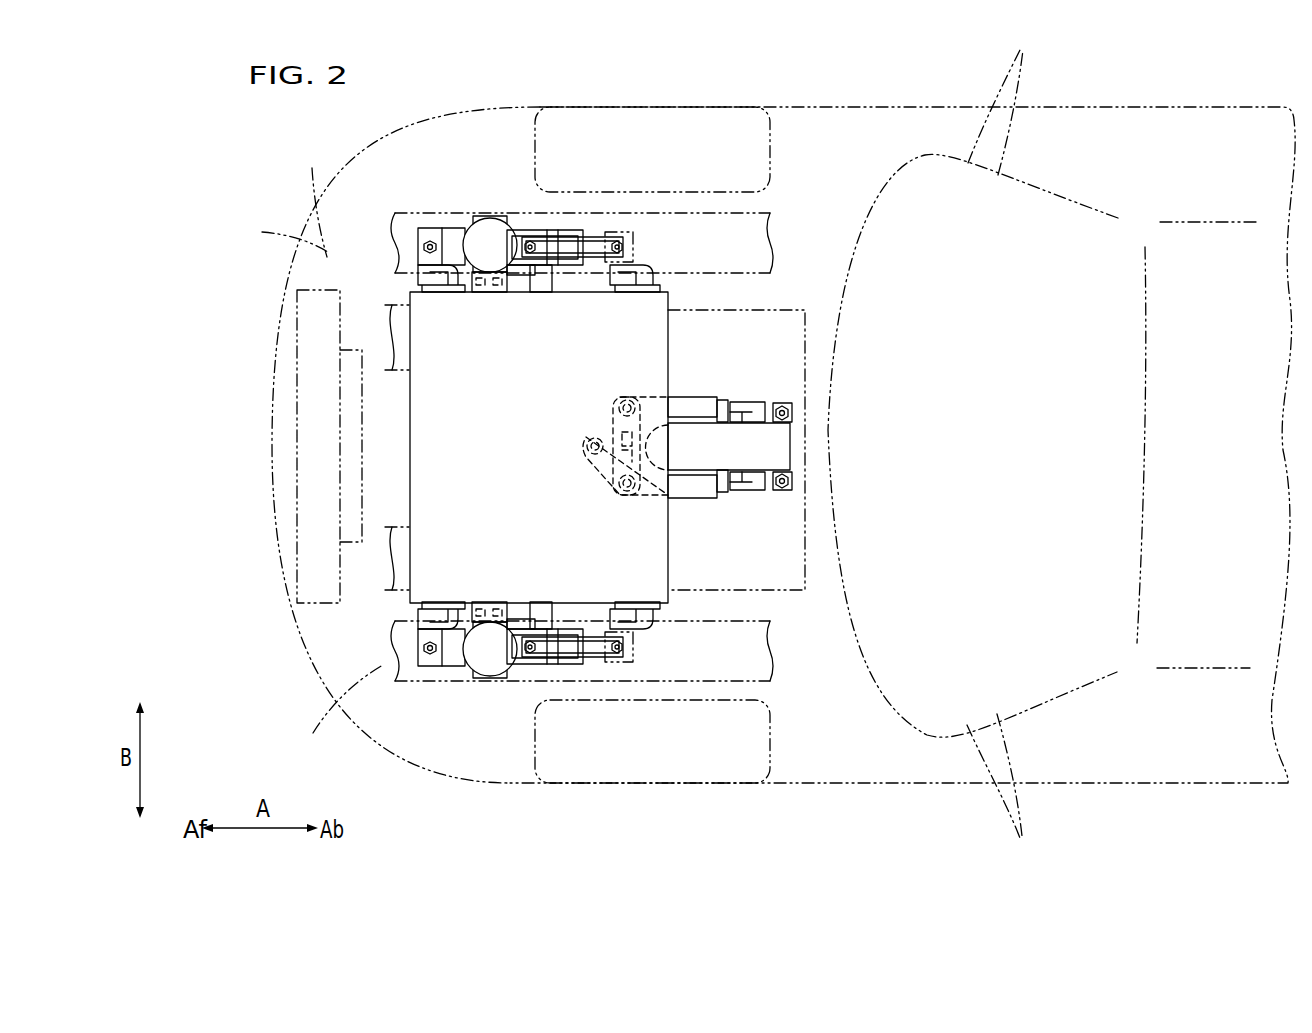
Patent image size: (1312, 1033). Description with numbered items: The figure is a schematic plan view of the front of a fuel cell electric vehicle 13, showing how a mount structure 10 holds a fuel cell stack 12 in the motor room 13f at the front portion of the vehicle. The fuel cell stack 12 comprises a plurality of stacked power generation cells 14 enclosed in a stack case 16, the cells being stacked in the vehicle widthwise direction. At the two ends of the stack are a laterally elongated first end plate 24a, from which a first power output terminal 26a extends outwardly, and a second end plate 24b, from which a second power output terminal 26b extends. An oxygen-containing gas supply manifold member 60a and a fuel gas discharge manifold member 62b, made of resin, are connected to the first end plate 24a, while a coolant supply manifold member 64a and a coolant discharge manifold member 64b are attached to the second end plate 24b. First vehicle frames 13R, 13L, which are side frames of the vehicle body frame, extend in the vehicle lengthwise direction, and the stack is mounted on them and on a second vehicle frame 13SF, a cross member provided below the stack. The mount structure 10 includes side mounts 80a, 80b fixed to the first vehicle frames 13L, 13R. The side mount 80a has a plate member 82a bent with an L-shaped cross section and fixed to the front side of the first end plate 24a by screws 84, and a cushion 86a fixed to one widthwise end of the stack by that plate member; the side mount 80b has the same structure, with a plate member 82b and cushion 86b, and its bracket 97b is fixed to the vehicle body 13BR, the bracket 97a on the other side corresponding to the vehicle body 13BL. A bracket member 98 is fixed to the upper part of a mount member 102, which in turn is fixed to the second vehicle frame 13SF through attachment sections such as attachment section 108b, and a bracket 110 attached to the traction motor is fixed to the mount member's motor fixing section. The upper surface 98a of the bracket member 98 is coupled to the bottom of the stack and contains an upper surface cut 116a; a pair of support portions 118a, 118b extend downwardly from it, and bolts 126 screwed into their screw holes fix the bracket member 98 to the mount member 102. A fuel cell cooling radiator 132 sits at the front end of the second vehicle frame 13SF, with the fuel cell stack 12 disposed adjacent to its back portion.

The mount structure 10 is at (253, 131).
The fuel cell stack 12 is at (522, 439).
The fuel cell electric vehicle 13 is at (826, 107).
The first vehicle frame 13R is at (308, 197).
The first vehicle frame 13L is at (336, 714).
The motor room 13f is at (277, 230).
The vehicle body 13BR is at (632, 262).
The vehicle body 13BL is at (628, 662).
The second vehicle frame 13SF is at (800, 540).
The power generation cells 14 is at (648, 347).
The stack case 16 is at (653, 333).
The first end plate 24a is at (593, 606).
The second end plate 24b is at (593, 289).
The first power output terminal 26a is at (548, 612).
The second power output terminal 26b is at (546, 282).
The oxygen-containing gas supply manifold member 60a is at (635, 603).
The fuel gas discharge manifold member 62b is at (437, 622).
The coolant supply manifold member 64a is at (633, 280).
The coolant discharge manifold member 64b is at (433, 270).
The side mount 80a is at (468, 683).
The side mount 80b is at (477, 204).
The plate member 82a is at (495, 603).
The plate member 82b is at (495, 292).
The screws 84 is at (481, 285).
The cushion 86a is at (490, 660).
The cushion 86b is at (490, 235).
The bracket 97a is at (618, 647).
The bracket 97b is at (618, 249).
The bracket member 98 is at (582, 440).
The upper surface 98a is at (600, 417).
The mount member 102 is at (782, 450).
The attachment section 108b is at (790, 413).
The bracket 110 is at (752, 488).
The upper surface cut 116a is at (600, 470).
The support portion 118a is at (695, 405).
The support portion 118b is at (696, 490).
The bolts 126 is at (738, 408).
The fuel cell cooling radiator 132 is at (310, 389).